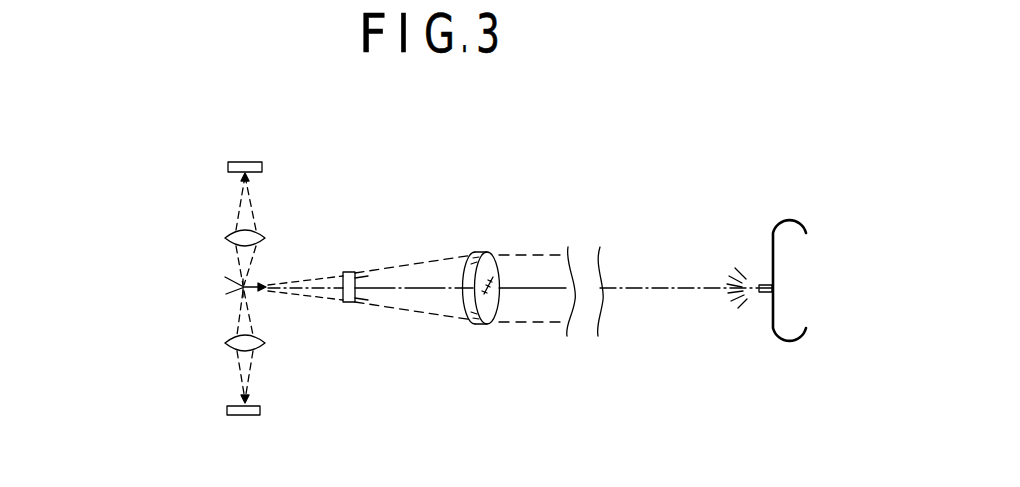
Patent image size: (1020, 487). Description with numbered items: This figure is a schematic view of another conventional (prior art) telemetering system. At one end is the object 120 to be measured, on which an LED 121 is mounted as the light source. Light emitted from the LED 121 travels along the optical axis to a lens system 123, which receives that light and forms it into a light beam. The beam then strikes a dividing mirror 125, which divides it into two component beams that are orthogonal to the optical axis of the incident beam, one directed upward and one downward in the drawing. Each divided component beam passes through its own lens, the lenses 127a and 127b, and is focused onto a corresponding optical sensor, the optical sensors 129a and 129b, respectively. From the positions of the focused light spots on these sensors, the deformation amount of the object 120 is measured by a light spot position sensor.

The object to be measured 120 is at (776, 222).
The LED 121 is at (764, 293).
The lens system 123 is at (347, 250).
The dividing mirror 125 is at (237, 294).
The lens 127a is at (265, 344).
The lens 127b is at (265, 238).
The optical sensor 129a is at (260, 411).
The optical sensor 129b is at (262, 169).